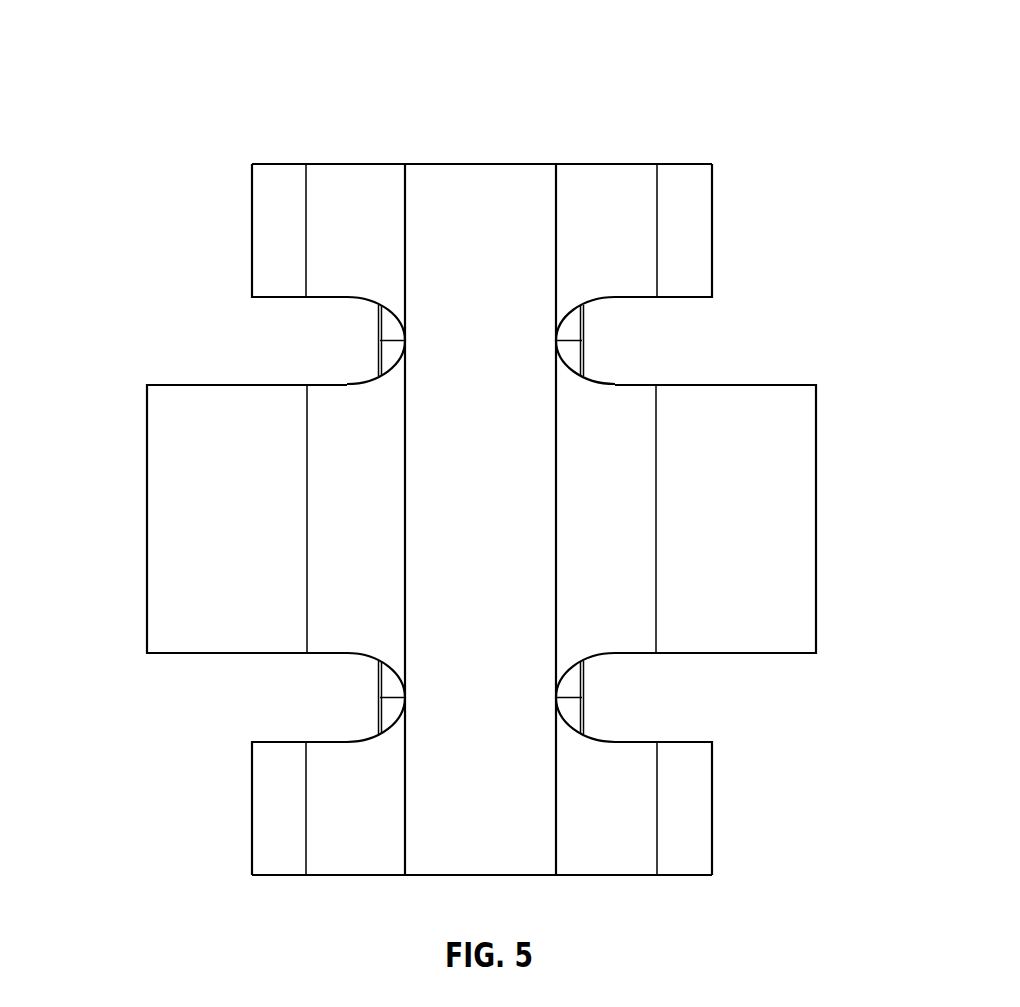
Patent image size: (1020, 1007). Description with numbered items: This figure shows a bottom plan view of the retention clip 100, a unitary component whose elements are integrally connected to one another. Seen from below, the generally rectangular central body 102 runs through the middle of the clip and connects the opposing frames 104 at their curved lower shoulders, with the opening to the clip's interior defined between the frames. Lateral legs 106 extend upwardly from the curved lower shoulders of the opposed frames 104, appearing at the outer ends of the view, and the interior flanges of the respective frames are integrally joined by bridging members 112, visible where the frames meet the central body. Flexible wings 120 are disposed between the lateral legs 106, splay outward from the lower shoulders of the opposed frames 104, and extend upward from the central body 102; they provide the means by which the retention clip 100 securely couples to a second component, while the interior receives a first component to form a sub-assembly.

The retention clip 100 is at (157, 38).
The central body 102 is at (482, 190).
The opposing frames 104 is at (355, 385).
The lateral legs 106 is at (265, 233).
The bridging members 112 is at (377, 725).
The flexible wings 120 is at (173, 530).